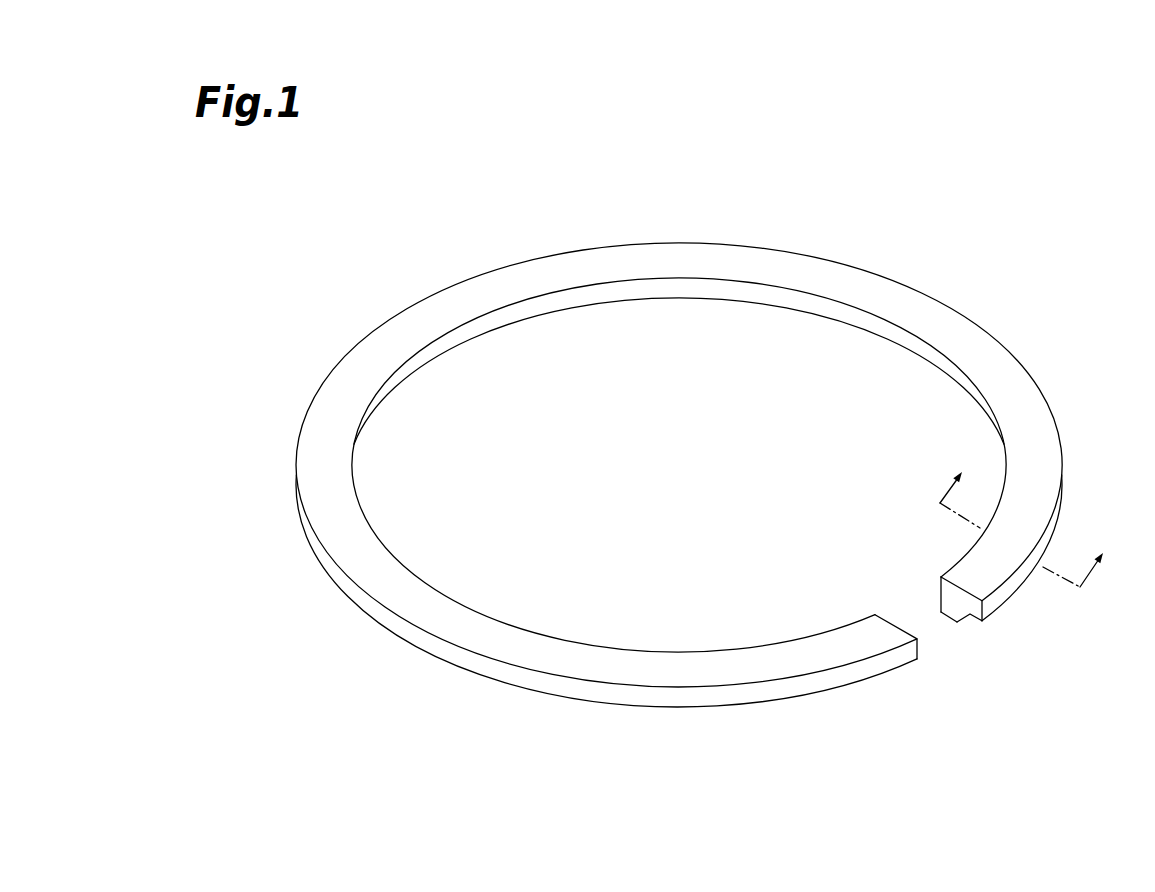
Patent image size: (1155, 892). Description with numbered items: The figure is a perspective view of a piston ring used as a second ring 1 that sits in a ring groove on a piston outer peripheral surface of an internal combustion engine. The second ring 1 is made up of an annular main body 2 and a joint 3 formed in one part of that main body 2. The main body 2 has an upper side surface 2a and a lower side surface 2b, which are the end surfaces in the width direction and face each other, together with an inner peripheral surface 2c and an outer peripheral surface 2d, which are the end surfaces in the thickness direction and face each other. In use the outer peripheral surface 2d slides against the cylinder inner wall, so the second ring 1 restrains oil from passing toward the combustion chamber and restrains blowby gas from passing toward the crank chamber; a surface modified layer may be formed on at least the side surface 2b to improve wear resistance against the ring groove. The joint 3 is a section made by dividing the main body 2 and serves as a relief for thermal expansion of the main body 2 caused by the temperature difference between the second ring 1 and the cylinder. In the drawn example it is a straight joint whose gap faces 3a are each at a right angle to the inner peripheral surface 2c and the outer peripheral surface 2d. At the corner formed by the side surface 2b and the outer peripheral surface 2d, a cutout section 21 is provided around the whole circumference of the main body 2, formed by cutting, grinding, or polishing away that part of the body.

The second ring 1 is at (1069, 299).
The main body 2 is at (365, 340).
The side surface (upper side surface) 2a is at (1035, 408).
The side surface (lower side surface) 2b is at (947, 618).
The inner peripheral surface 2c is at (662, 293).
The outer peripheral surface 2d is at (500, 670).
The joint 3 is at (937, 662).
The gap faces 3a is at (950, 600).
The cutout section 21 is at (977, 630).